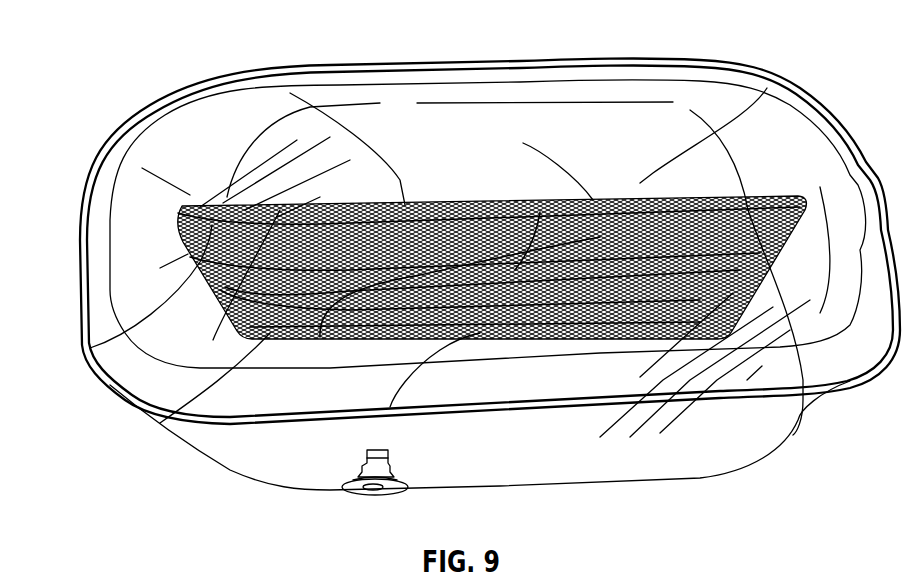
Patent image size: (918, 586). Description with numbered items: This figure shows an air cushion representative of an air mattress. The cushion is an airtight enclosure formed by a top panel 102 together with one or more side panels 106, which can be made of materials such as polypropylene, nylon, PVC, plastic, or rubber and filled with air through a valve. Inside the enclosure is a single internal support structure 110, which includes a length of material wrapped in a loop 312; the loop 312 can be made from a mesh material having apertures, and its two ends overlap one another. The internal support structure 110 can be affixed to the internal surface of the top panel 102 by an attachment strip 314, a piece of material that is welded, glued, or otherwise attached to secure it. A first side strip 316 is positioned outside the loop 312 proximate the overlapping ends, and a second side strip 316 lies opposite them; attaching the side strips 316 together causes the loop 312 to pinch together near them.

The top panel 102 is at (760, 72).
The internal support structure 110 is at (92, 348).
The attachment strip 314 is at (172, 215).
The loop 312 is at (321, 338).
The side strip 316 is at (228, 220).
The side panel 106 is at (322, 472).